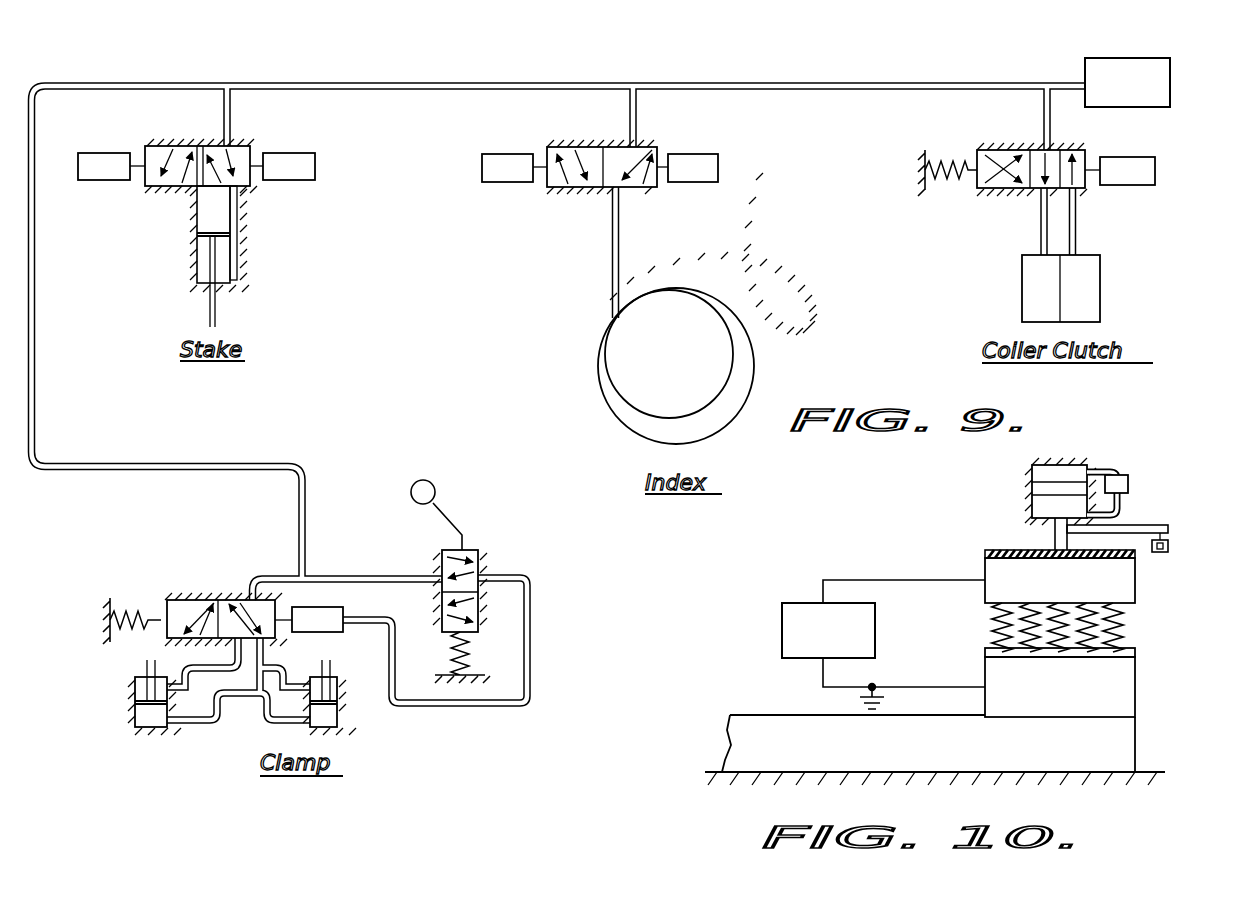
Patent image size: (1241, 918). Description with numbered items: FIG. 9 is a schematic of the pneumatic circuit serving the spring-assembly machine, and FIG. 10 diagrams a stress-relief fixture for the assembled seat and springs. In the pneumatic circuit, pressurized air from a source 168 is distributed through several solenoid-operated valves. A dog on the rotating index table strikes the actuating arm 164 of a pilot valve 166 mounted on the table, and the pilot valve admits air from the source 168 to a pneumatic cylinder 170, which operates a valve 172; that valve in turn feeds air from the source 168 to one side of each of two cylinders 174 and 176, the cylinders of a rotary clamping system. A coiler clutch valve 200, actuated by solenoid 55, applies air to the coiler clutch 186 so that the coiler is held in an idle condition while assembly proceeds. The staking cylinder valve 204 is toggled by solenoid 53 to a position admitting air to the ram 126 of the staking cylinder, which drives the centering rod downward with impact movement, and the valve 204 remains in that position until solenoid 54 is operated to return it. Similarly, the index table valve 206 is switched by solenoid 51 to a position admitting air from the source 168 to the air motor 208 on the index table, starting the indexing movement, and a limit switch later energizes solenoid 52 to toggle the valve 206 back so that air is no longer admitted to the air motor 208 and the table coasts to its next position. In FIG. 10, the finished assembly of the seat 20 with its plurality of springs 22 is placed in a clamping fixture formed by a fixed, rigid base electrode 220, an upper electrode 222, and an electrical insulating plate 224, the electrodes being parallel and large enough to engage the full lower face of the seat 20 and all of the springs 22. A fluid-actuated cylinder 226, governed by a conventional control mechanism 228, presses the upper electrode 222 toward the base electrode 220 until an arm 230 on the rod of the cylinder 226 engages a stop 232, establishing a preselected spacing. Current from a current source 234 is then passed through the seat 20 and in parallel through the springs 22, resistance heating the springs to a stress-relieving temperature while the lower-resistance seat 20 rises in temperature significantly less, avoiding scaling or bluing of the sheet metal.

In FIG. 9, the staking cylinder valve 204 is at (168, 146).
In FIG. 9, the ram 126 is at (193, 223).
In FIG. 9, the solenoid 53 is at (104, 142).
In FIG. 9, the solenoid 54 is at (312, 142).
In FIG. 9, the index table valve 206 is at (580, 146).
In FIG. 9, the solenoid 52 is at (503, 154).
In FIG. 9, the solenoid 51 is at (700, 153).
In FIG. 9, the air motor 208 is at (748, 312).
In FIG. 9, the source 168 is at (1112, 57).
In FIG. 9, the coiler clutch valve 200 is at (1080, 147).
In FIG. 9, the solenoid 55 is at (1130, 186).
In FIG. 9, the coiler clutch 186 is at (1092, 297).
In FIG. 9, the valve 172 is at (200, 600).
In FIG. 9, the pneumatic cylinder 170 is at (325, 632).
In FIG. 9, the cylinder 174 is at (135, 690).
In FIG. 9, the cylinder 176 is at (338, 722).
In FIG. 9, the actuating arm 164 is at (452, 521).
In FIG. 9, the pilot valve 166 is at (480, 560).
In FIG. 10, the current source 234 is at (782, 625).
In FIG. 10, the upper electrode 222 is at (985, 575).
In FIG. 10, the electrical insulating plate 224 is at (995, 549).
In FIG. 10, the springs 22 is at (987, 628).
In FIG. 10, the seat 20 is at (985, 650).
In FIG. 10, the base electrode 220 is at (1115, 685).
In FIG. 10, the cylinder 226 is at (1028, 493).
In FIG. 10, the control mechanism 228 is at (1126, 471).
In FIG. 10, the arm 230 is at (1100, 530).
In FIG. 10, the stop 232 is at (1160, 553).